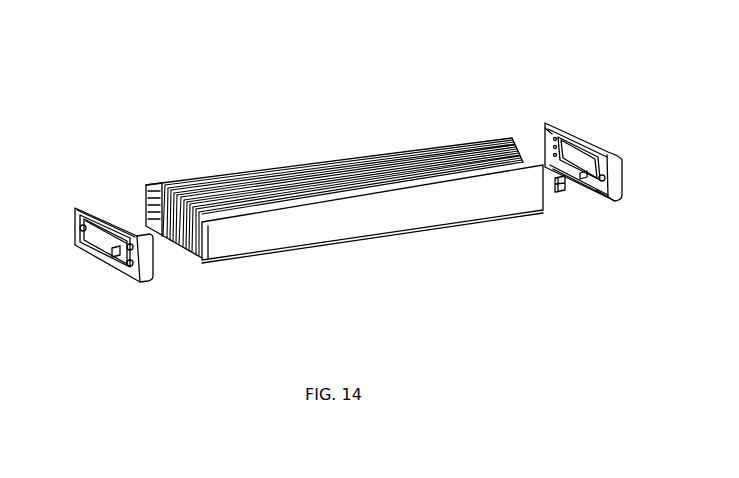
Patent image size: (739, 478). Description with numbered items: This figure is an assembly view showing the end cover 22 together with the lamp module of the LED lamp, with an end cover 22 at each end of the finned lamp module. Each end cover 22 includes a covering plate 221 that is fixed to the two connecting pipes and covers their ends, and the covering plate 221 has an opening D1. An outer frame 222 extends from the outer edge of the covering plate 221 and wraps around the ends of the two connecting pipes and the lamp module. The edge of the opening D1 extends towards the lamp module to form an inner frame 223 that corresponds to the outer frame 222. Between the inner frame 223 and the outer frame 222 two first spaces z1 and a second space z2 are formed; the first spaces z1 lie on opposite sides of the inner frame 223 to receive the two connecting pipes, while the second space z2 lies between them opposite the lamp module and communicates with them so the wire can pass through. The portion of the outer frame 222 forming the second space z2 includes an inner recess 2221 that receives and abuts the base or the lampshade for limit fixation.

The end cover 22 is at (605, 146).
The covering plate 221 is at (98, 258).
The outer frame 222 is at (84, 206).
The inner frame 223 is at (124, 266).
The inner recess 2221 is at (558, 191).
The opening D1 is at (106, 232).
The first space z1 is at (545, 130).
The second space z2 is at (600, 197).